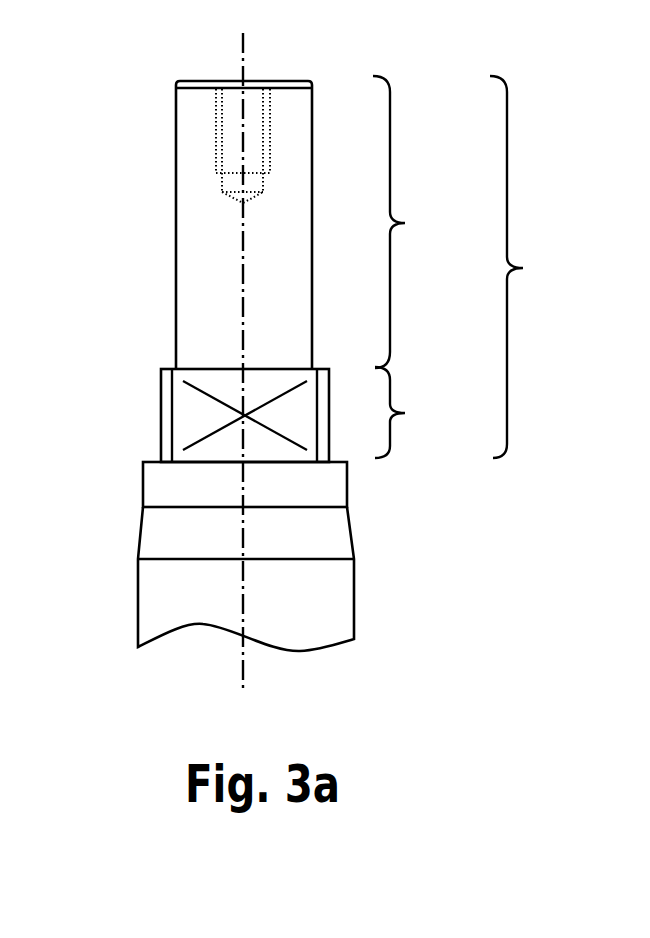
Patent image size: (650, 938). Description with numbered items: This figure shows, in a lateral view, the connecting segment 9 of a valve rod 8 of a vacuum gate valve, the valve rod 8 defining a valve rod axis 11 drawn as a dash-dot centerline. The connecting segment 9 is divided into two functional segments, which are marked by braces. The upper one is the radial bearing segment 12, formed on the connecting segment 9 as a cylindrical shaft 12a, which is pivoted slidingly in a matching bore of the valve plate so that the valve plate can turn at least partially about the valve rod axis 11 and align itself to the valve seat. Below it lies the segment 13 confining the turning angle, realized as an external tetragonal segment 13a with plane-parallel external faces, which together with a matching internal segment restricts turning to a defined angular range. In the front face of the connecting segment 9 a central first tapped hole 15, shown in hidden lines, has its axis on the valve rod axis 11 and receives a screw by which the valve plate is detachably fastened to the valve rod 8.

The valve rod 8 is at (132, 53).
The connecting segment 9 is at (527, 267).
The valve rod axis 11 is at (242, 40).
The radial bearing segment 12 is at (417, 222).
The cylindrical shaft 12a is at (203, 263).
The segment confining the turning angle 13 is at (419, 412).
The external tetragonal segment 13a is at (200, 415).
The first tapped hole 15 is at (230, 150).